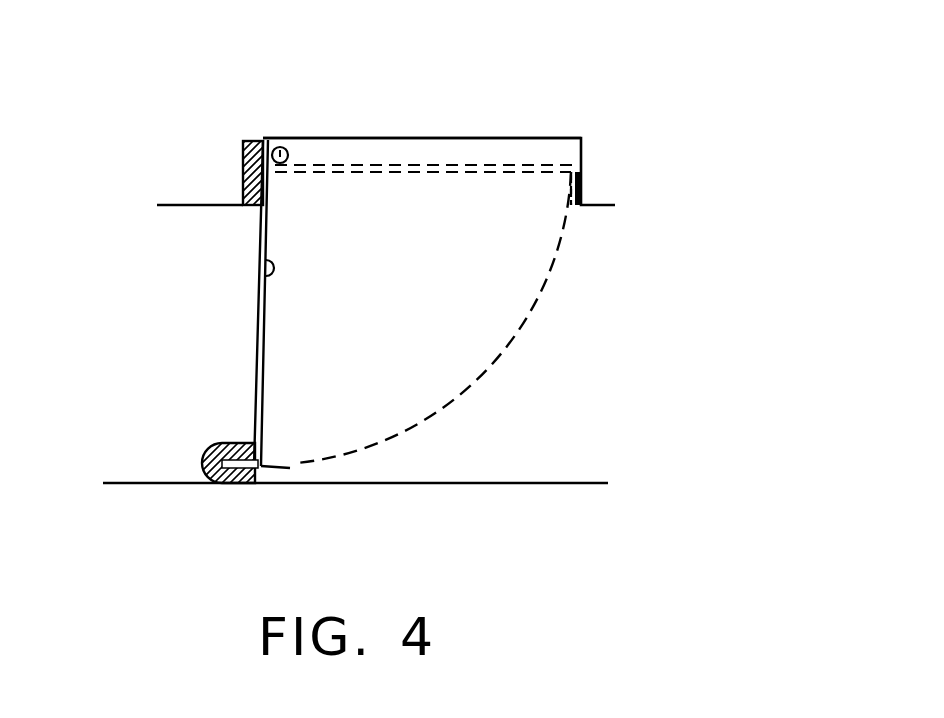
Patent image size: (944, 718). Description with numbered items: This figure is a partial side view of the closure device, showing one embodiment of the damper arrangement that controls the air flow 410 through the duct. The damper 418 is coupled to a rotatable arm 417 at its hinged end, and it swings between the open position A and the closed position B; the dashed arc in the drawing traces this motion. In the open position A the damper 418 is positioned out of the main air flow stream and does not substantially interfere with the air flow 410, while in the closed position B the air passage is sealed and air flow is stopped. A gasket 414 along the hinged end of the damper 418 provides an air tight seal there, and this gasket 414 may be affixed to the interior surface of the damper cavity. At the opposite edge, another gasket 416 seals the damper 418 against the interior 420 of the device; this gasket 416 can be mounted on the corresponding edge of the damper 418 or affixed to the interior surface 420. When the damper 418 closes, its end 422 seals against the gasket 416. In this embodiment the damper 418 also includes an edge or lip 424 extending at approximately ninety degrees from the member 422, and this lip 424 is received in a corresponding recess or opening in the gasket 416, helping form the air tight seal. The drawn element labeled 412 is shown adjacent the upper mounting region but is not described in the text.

The air flow 410 is at (556, 344).
The top panel 412 is at (318, 134).
The gasket 414 is at (243, 148).
The gasket 416 is at (210, 442).
The rotatable arm 417 is at (280, 146).
The damper 418 is at (398, 172).
The interior 420 is at (518, 483).
The end 422 is at (463, 138).
The lip 424 is at (583, 166).
The open position A is at (497, 176).
The closed position B is at (262, 257).